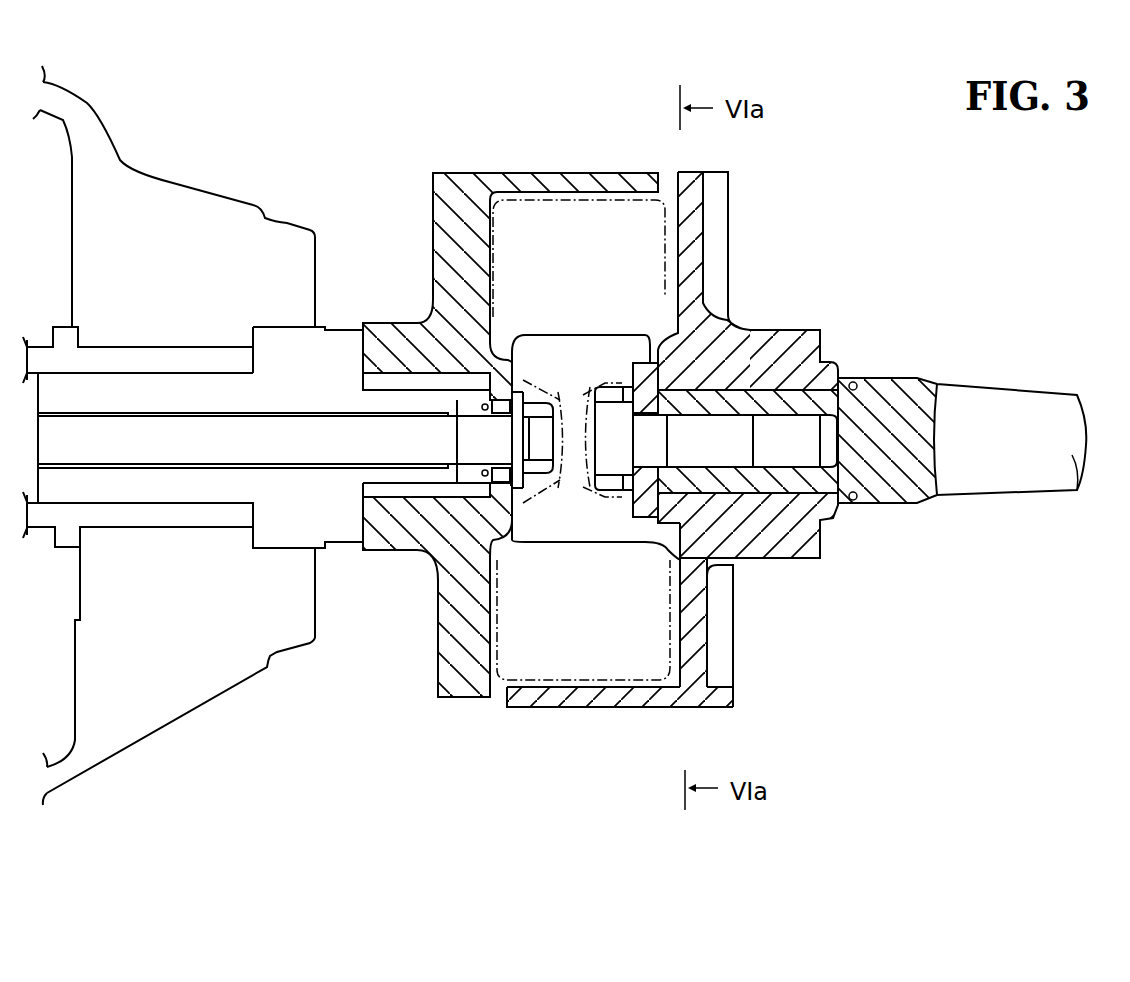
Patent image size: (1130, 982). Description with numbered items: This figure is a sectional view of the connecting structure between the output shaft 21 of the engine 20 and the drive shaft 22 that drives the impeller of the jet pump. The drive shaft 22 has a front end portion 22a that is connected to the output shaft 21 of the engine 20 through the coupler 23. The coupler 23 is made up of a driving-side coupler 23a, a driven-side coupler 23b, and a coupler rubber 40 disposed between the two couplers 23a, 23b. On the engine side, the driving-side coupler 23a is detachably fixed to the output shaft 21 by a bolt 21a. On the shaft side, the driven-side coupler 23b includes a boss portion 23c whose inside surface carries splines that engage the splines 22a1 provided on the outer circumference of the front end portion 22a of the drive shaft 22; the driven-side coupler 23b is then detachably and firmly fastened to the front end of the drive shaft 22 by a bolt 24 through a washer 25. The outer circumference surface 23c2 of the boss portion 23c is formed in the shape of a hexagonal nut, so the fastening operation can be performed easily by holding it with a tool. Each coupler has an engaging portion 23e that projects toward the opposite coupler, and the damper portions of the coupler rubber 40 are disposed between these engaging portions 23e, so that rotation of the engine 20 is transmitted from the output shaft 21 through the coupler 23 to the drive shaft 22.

The engine 20 is at (207, 712).
The output shaft 21 is at (313, 362).
The bolt 21a is at (540, 470).
The drive shaft 22 is at (872, 543).
The front end portion 22a is at (795, 558).
The splines 22a1 is at (742, 390).
The coupler 23 is at (646, 496).
The driving-side coupler 23a is at (473, 635).
The driven-side coupler 23b is at (702, 700).
The boss portion 23c is at (766, 552).
The outer circumference surface 23c2 is at (800, 560).
The engaging portion 23e is at (653, 693).
The bolt 24 is at (597, 480).
The washer 25 is at (630, 500).
The coupler rubber 40 is at (552, 170).